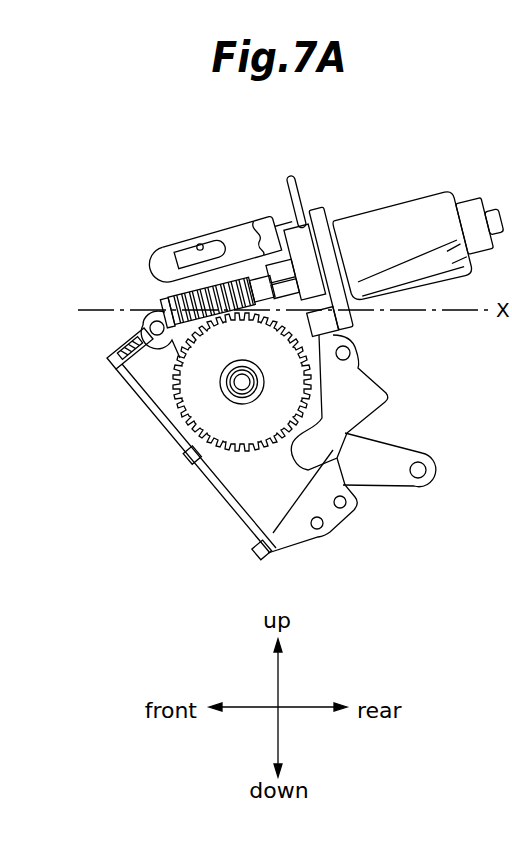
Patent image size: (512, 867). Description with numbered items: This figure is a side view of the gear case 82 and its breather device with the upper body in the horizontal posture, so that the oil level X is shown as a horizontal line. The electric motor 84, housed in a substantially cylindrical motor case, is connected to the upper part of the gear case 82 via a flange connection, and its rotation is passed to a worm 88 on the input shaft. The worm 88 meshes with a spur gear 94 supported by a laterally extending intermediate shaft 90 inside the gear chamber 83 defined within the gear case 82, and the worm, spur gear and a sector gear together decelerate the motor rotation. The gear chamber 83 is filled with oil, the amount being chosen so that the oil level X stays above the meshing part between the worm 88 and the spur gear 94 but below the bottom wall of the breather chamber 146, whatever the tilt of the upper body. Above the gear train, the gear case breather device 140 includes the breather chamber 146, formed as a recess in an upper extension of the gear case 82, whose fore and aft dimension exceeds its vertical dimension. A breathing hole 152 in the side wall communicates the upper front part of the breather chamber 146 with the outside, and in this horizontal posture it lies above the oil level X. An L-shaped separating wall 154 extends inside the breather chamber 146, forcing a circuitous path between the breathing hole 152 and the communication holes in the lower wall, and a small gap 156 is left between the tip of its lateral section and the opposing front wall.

The electric motor 84 is at (379, 212).
The worm 88 is at (170, 297).
The intermediate shaft 90 is at (241, 388).
The spur gear 94 is at (190, 400).
The gear chamber 83 is at (260, 488).
The gear case 82 is at (338, 425).
The gear case breather device 140 is at (190, 212).
The breather chamber 146 is at (244, 248).
The breathing hole 152 is at (201, 243).
The separating wall 154 is at (177, 258).
The small gap 156 is at (164, 276).